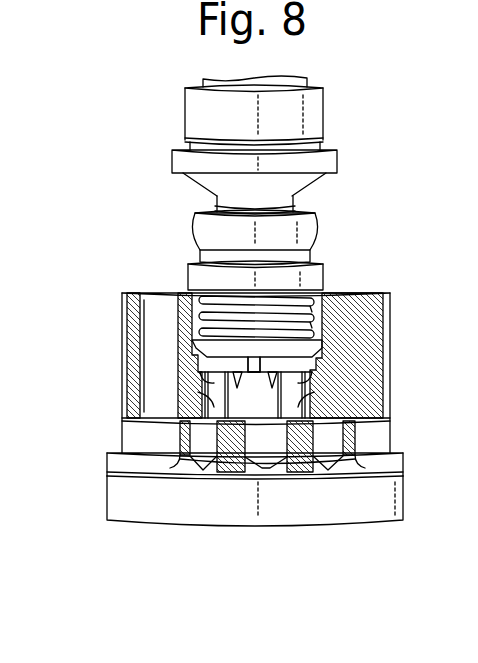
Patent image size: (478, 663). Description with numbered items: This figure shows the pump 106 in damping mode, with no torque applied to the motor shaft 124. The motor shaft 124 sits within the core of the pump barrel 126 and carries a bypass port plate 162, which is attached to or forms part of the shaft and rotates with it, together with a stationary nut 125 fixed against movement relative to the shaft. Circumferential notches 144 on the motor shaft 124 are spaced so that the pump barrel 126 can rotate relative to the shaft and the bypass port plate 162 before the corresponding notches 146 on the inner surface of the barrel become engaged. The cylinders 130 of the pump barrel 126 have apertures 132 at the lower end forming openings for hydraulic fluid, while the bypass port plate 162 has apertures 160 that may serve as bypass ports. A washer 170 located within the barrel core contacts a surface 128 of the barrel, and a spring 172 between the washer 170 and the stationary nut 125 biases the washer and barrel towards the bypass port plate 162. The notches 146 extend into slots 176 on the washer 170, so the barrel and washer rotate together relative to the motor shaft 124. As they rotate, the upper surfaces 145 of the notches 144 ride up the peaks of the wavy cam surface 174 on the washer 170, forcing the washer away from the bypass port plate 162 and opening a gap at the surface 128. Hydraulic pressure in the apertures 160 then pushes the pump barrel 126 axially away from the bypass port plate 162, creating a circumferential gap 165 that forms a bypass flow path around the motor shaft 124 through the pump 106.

The pump 106 is at (148, 133).
The motor shaft 124 is at (313, 108).
The stationary nut 125 is at (325, 268).
The spring 172 is at (323, 298).
The pump barrel 126 is at (372, 310).
The cam surface 174 is at (190, 337).
The washer 170 is at (300, 346).
The surface 128 is at (188, 375).
The slots 176 is at (245, 362).
The notches 146 is at (200, 386).
The upper surface 145 is at (205, 396).
The circumferential notches 144 is at (215, 403).
The cylinders 130 is at (203, 438).
The apertures 160 is at (217, 474).
The apertures 132 is at (320, 473).
The gap 165 is at (126, 484).
The bypass port plate 162 is at (150, 513).